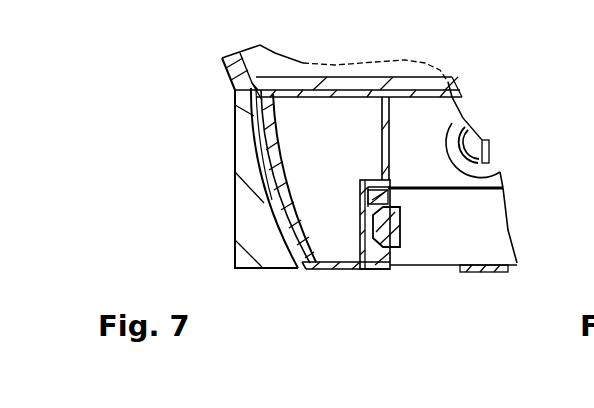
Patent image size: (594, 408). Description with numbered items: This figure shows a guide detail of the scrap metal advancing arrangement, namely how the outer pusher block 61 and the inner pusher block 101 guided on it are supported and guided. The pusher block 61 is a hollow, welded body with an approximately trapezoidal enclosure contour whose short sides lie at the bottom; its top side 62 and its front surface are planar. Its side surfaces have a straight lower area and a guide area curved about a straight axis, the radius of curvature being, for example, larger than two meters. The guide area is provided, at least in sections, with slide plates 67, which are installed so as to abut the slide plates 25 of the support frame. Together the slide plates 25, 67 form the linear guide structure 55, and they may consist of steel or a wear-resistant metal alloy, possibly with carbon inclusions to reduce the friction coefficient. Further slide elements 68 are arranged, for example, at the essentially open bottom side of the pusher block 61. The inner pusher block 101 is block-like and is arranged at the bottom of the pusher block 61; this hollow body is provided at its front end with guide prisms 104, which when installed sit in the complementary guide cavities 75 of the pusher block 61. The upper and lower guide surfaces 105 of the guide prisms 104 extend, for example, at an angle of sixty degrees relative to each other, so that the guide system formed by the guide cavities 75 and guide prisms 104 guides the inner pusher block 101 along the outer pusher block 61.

The slide plates 25 is at (272, 124).
The linear guide structure 55 is at (236, 141).
The pusher block 61 is at (422, 97).
The top side 62 is at (410, 90).
The slide plates 67 is at (262, 105).
The slide elements 68 is at (305, 272).
The guide cavities 75 is at (378, 198).
The pusher block 101 is at (457, 223).
The guide prisms 104 is at (383, 233).
The guide surfaces 105 is at (370, 210).